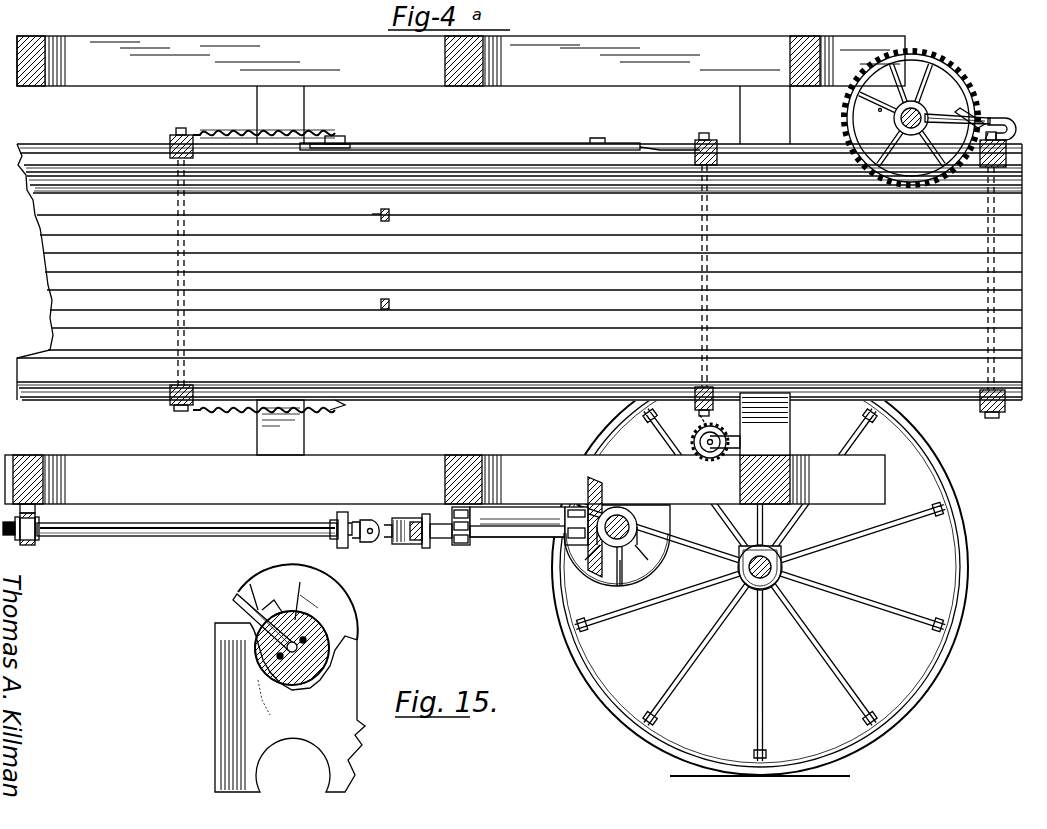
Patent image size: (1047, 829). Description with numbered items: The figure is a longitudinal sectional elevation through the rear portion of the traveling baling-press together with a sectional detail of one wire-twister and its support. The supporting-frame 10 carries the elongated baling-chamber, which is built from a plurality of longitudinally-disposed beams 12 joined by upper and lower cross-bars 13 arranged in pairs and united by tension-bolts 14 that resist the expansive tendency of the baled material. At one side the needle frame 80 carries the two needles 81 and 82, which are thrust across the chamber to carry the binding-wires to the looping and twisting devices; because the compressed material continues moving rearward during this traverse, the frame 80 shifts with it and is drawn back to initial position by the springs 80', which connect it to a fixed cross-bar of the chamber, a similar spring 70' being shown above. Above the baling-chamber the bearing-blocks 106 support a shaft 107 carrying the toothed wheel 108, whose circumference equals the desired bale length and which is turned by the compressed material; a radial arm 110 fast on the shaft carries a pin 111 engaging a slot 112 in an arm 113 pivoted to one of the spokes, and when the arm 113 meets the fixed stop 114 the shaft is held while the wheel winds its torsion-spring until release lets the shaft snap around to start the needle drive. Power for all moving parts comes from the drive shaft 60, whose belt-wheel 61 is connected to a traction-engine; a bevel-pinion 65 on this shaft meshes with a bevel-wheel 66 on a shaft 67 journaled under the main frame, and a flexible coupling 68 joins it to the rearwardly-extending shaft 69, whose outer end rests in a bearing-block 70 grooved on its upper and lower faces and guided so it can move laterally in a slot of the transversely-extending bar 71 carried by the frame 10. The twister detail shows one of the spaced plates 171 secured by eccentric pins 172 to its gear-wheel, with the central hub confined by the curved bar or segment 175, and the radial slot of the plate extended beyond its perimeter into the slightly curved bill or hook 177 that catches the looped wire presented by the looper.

In FIG. 4A, the supporting-frame 10 is at (207, 40).
In FIG. 4A, the longitudinally-disposed beams 12 is at (101, 152).
In FIG. 4A, the cross-bars 13 is at (175, 136).
In FIG. 4A, the tension-bolts 14 is at (698, 140).
In FIG. 4A, the upper spring 70' is at (491, 117).
In FIG. 4A, the supporting-frame 80 is at (500, 136).
In FIG. 4A, the springs 80' is at (491, 424).
In FIG. 4A, the needle 81 is at (390, 216).
In FIG. 4A, the needle 82 is at (390, 304).
In FIG. 4A, the bearing-blocks 106 is at (893, 128).
In FIG. 4A, the shaft 107 is at (893, 140).
In FIG. 4A, the toothed wheel 108 is at (950, 75).
In FIG. 4A, the radial arm 110 is at (940, 132).
In FIG. 4A, the pin 111 is at (975, 117).
In FIG. 4A, the slot 112 is at (966, 110).
In FIG. 4A, the arm 113 is at (935, 106).
In FIG. 4A, the fixed stop 114 is at (1016, 130).
In FIG. 4A, the shaft 60 is at (640, 578).
In FIG. 4A, the belt-wheel 61 is at (660, 570).
In FIG. 4A, the bevel-pinion 65 is at (630, 543).
In FIG. 4A, the bevel-wheel 66 is at (590, 570).
In FIG. 4A, the shaft 67 is at (510, 545).
In FIG. 4A, the flexible coupling 68 is at (380, 546).
In FIG. 4A, the rearwardly-extending shaft 69 is at (212, 539).
In FIG. 4A, the bearing-block 70 is at (40, 531).
In FIG. 4A, the transversely-extending bar 71 is at (22, 545).
In FIG. 15, the spaced plates 171 is at (305, 595).
In FIG. 15, the pins 172 is at (318, 638).
In FIG. 15, the curved bar or segment 175 is at (290, 707).
In FIG. 15, the bill or hook 177 is at (236, 597).